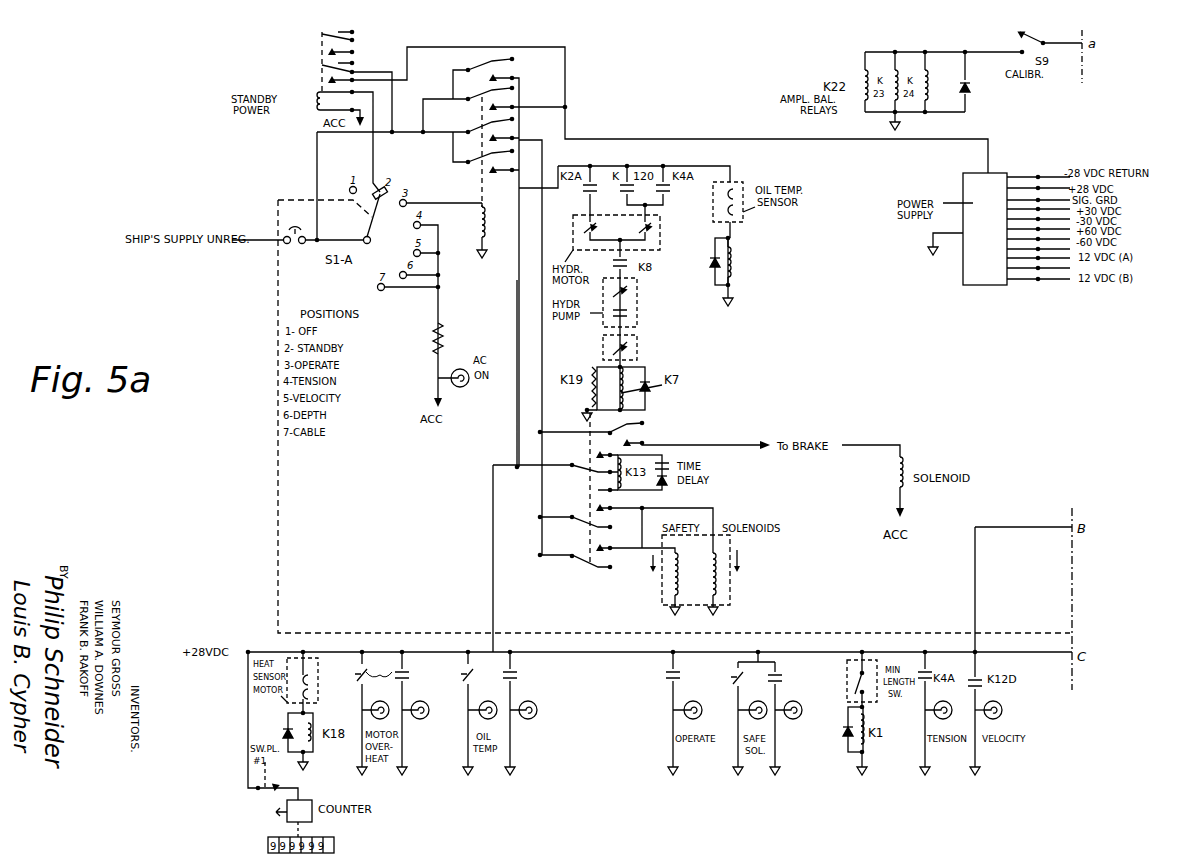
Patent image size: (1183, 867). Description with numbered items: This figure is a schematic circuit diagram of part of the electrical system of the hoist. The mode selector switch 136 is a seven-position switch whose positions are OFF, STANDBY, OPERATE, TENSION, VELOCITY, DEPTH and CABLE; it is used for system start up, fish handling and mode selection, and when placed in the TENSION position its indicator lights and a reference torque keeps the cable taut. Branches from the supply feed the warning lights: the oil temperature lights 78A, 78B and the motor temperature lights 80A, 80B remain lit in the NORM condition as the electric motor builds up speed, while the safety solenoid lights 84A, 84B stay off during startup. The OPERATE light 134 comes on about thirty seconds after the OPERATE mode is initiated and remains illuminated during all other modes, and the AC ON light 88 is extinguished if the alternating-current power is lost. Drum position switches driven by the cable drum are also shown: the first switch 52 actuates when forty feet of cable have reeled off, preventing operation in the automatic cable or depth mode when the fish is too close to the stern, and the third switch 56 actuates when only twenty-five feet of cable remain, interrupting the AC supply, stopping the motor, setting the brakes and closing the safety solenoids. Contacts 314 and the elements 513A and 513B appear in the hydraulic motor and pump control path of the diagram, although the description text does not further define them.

The hydraulic motor contacts 314 is at (616, 232).
The hydraulic pump switch 513A is at (638, 302).
The hydraulic pump contact 513B is at (643, 315).
The third switch 56 is at (637, 344).
The mode selector switch 136 is at (392, 302).
The AC ON light 88 is at (467, 386).
The motor temperature light 80A is at (374, 713).
The motor temperature light 80B is at (416, 713).
The oil temperature light 78A is at (481, 713).
The oil temperature light 78B is at (531, 713).
The OPERATE light 134 is at (670, 713).
The safety solenoid light 84A is at (793, 718).
The safety solenoid light 84B is at (749, 718).
The first switch 52 is at (847, 664).